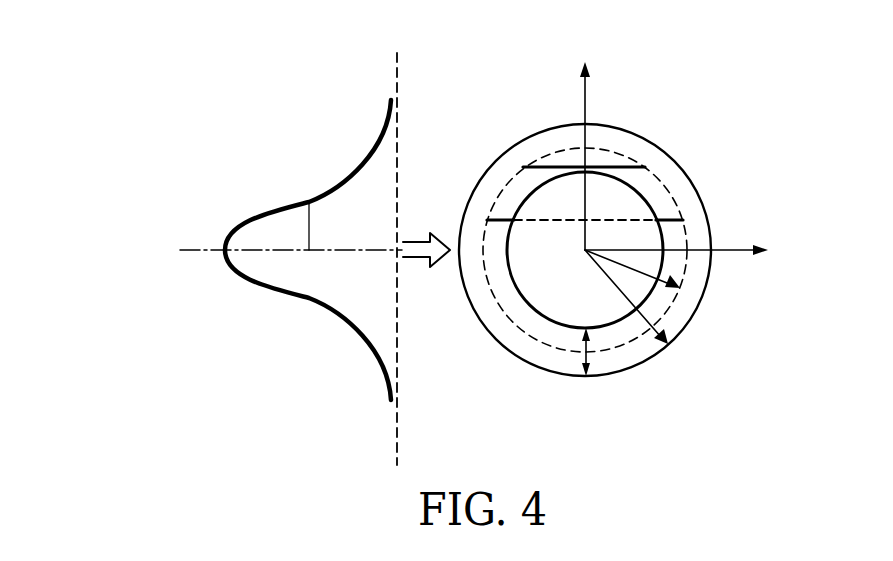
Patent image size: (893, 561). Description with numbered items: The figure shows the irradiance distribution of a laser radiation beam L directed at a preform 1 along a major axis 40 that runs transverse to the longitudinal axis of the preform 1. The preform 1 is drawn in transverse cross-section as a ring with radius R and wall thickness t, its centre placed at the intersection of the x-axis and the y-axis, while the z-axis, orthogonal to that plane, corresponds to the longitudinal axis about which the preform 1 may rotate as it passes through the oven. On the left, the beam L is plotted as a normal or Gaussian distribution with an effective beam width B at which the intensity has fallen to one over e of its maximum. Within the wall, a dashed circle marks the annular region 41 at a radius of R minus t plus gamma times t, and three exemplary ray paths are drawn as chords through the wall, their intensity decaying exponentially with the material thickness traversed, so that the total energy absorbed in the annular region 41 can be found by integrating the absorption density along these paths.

The preform 1 is at (606, 122).
The major axis 40 is at (208, 251).
The annular region 41 is at (532, 332).